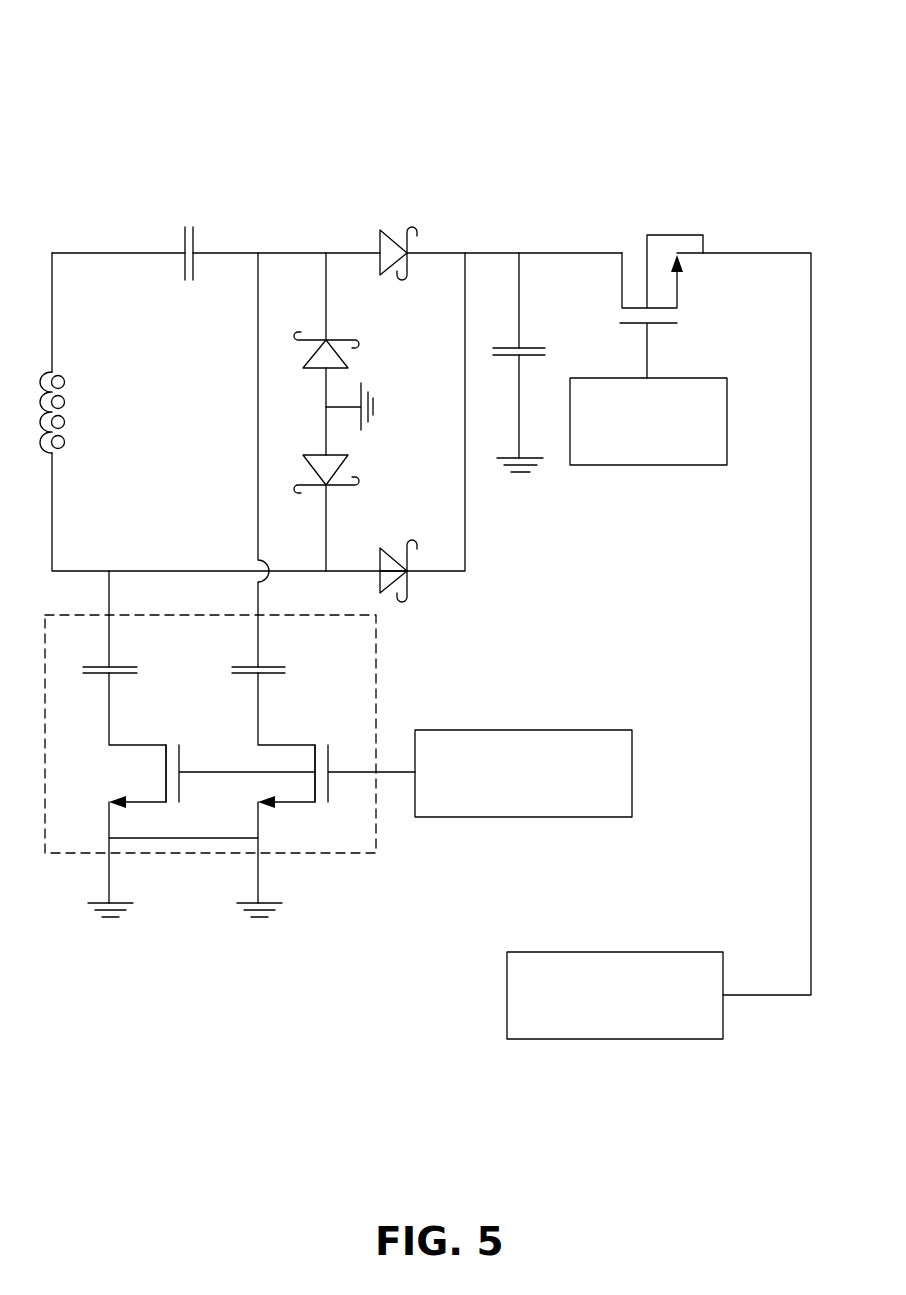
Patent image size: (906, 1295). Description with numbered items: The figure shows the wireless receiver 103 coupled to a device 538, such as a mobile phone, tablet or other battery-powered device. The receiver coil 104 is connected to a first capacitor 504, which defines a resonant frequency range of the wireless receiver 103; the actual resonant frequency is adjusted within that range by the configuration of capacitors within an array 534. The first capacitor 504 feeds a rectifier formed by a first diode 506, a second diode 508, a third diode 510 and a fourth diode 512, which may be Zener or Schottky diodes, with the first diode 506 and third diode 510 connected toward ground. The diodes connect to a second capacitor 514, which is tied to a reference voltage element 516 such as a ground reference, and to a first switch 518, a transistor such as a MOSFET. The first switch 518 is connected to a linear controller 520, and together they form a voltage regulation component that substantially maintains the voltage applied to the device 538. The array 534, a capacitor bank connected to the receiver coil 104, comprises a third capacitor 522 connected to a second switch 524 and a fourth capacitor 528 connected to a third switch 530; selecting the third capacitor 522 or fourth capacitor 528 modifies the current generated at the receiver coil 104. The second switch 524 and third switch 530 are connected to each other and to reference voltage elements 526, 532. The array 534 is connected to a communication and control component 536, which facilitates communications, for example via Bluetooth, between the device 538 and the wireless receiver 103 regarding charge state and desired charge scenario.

The wireless receiver 103 is at (137, 44).
The receiver coil 104 is at (63, 397).
The first capacitor 504 is at (184, 240).
The first diode 506 is at (348, 367).
The second diode 508 is at (380, 238).
The third diode 510 is at (348, 455).
The fourth diode 512 is at (383, 547).
The second capacitor 514 is at (525, 348).
The reference voltage element 516 is at (513, 474).
The first switch 518 is at (677, 305).
The linear controller 520 is at (685, 465).
The third capacitor 522 is at (121, 665).
The second switch 524 is at (148, 745).
The reference voltage element 526 is at (130, 903).
The fourth capacitor 528 is at (270, 665).
The third switch 530 is at (283, 745).
The reference voltage element 532 is at (280, 903).
The array 534 is at (376, 668).
The communication and control component 536 is at (580, 730).
The device 538 is at (505, 992).